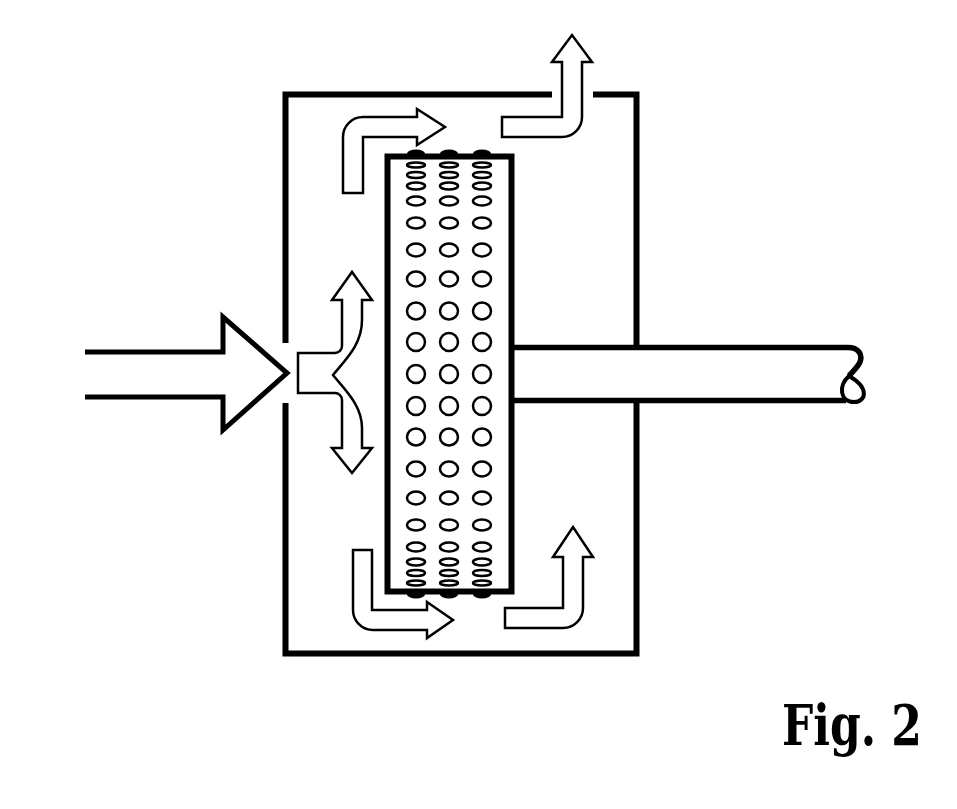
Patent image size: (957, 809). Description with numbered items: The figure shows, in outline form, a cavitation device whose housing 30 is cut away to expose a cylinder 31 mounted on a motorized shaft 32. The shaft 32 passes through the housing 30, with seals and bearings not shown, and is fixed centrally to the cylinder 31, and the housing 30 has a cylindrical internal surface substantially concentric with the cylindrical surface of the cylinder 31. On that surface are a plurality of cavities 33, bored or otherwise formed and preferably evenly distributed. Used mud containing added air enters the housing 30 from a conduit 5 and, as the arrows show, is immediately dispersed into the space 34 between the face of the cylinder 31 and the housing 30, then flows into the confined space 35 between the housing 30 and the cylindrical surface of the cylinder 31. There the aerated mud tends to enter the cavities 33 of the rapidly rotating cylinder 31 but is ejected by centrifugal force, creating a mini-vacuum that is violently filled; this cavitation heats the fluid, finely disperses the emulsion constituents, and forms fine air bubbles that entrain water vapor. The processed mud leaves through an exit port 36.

The conduit 5 is at (160, 352).
The housing 30 is at (640, 505).
The cylinder 31 is at (515, 195).
The motorized shaft 32 is at (797, 345).
The cavities 33 is at (452, 276).
The space 34 is at (328, 231).
The confined space 35 is at (473, 132).
The exit port 36 is at (583, 77).